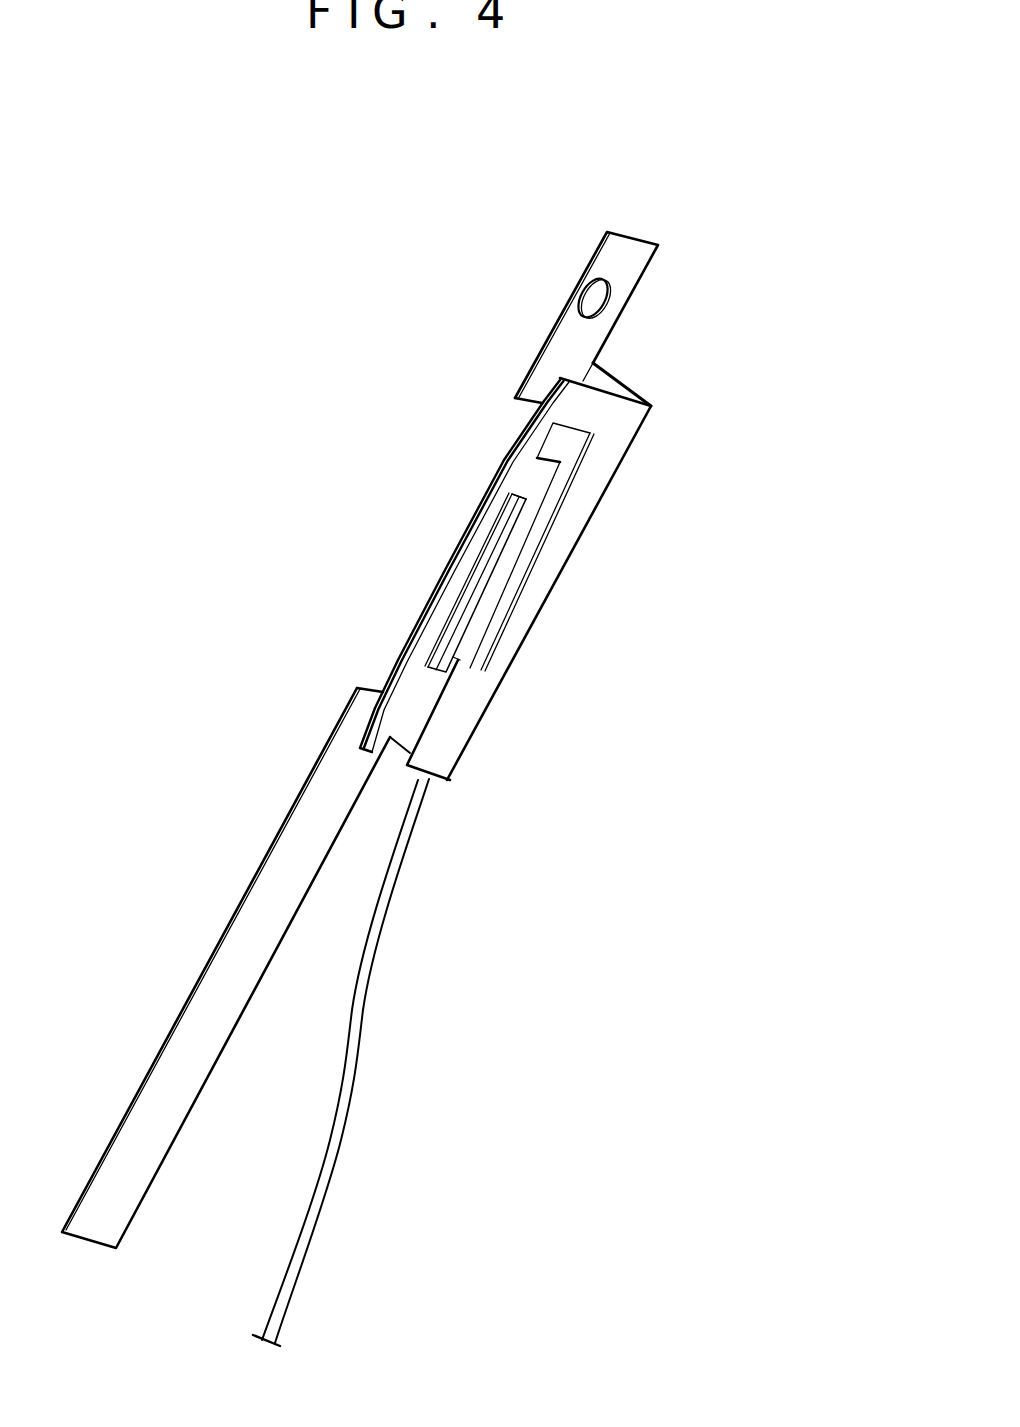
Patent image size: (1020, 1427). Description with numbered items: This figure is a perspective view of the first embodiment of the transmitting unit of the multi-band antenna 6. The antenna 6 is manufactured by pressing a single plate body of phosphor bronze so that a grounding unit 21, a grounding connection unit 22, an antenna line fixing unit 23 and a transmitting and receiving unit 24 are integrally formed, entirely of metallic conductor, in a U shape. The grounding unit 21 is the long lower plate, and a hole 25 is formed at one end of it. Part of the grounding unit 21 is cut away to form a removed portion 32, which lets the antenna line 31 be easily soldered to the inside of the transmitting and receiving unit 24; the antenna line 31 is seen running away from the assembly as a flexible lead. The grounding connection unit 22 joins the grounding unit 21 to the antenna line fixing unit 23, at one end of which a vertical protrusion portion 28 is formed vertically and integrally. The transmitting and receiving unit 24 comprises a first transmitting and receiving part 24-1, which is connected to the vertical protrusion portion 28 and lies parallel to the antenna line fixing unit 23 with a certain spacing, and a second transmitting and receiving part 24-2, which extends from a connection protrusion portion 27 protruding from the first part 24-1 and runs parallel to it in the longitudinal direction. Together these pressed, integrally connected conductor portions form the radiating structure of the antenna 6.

The multi-band antenna 6 is at (674, 376).
The grounding unit 21 is at (288, 848).
The grounding connection unit 22 is at (421, 712).
The antenna line fixing unit 23 is at (493, 662).
The transmitting and receiving unit 24 is at (728, 550).
The first transmitting and receiving part 24-1 is at (484, 535).
The second transmitting and receiving part 24-2 is at (492, 578).
The hole 25 is at (586, 300).
The connection protrusion portion 27 is at (530, 478).
The vertical protrusion portion 28 is at (593, 402).
The antenna line 31 is at (332, 1152).
The removed portion 32 is at (480, 492).